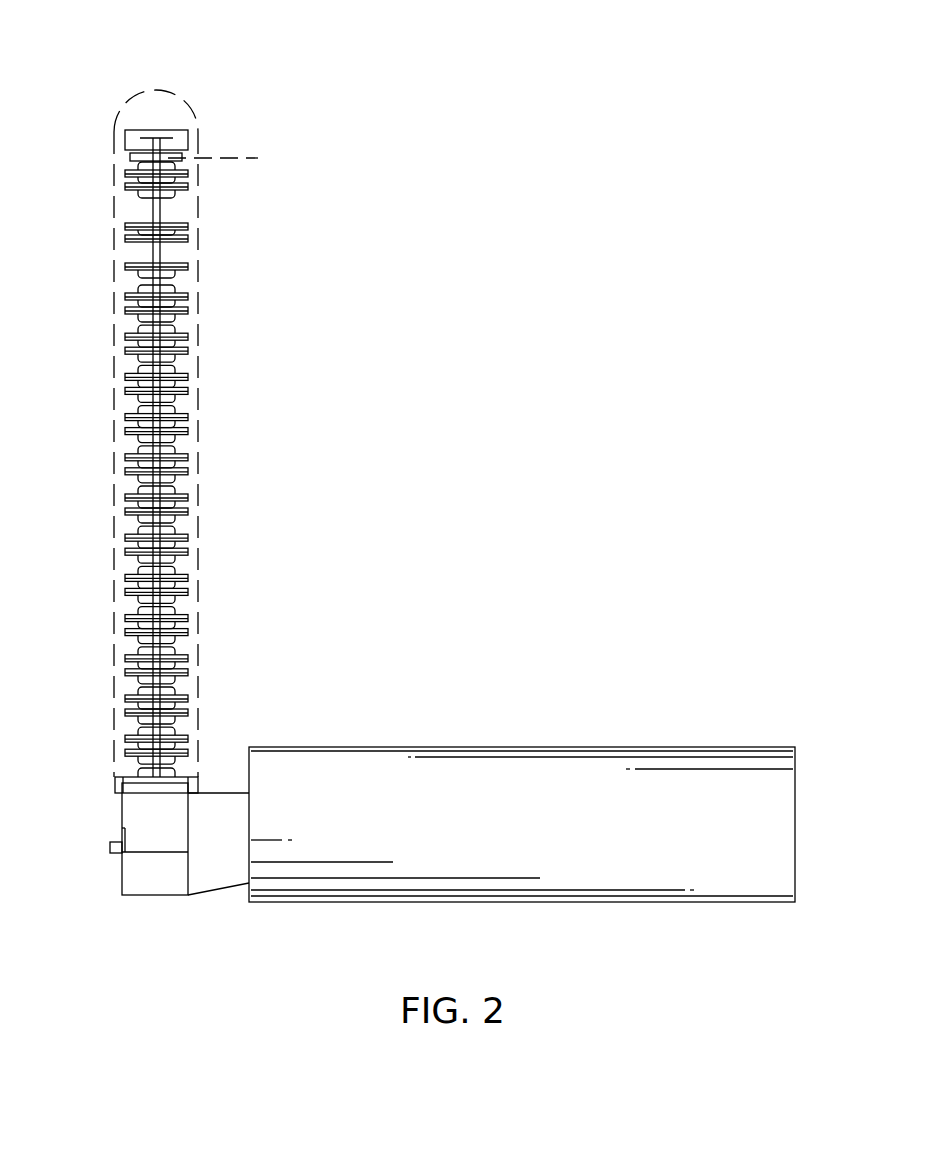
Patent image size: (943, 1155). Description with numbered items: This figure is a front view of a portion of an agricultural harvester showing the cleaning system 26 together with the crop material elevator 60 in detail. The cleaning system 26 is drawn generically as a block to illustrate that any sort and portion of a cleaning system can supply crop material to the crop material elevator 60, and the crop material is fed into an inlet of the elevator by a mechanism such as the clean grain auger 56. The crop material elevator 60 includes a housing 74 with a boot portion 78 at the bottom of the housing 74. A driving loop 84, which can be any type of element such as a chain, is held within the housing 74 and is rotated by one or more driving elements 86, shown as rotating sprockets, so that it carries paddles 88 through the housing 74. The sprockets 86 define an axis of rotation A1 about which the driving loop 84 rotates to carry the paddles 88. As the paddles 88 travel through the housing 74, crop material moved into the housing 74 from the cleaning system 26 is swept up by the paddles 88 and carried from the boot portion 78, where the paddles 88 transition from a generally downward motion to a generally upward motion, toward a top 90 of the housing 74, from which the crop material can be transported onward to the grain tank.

The cleaning system 26 is at (575, 893).
The clean grain auger 56 is at (222, 898).
The crop material elevator 60 is at (182, 453).
The housing 74 is at (198, 220).
The boot portion 78 is at (155, 897).
The driving loop 84 is at (140, 285).
The driving element 86 is at (132, 158).
The paddle 88 is at (120, 378).
The top of the housing 90 is at (170, 92).
The axis of rotation A1 is at (252, 158).